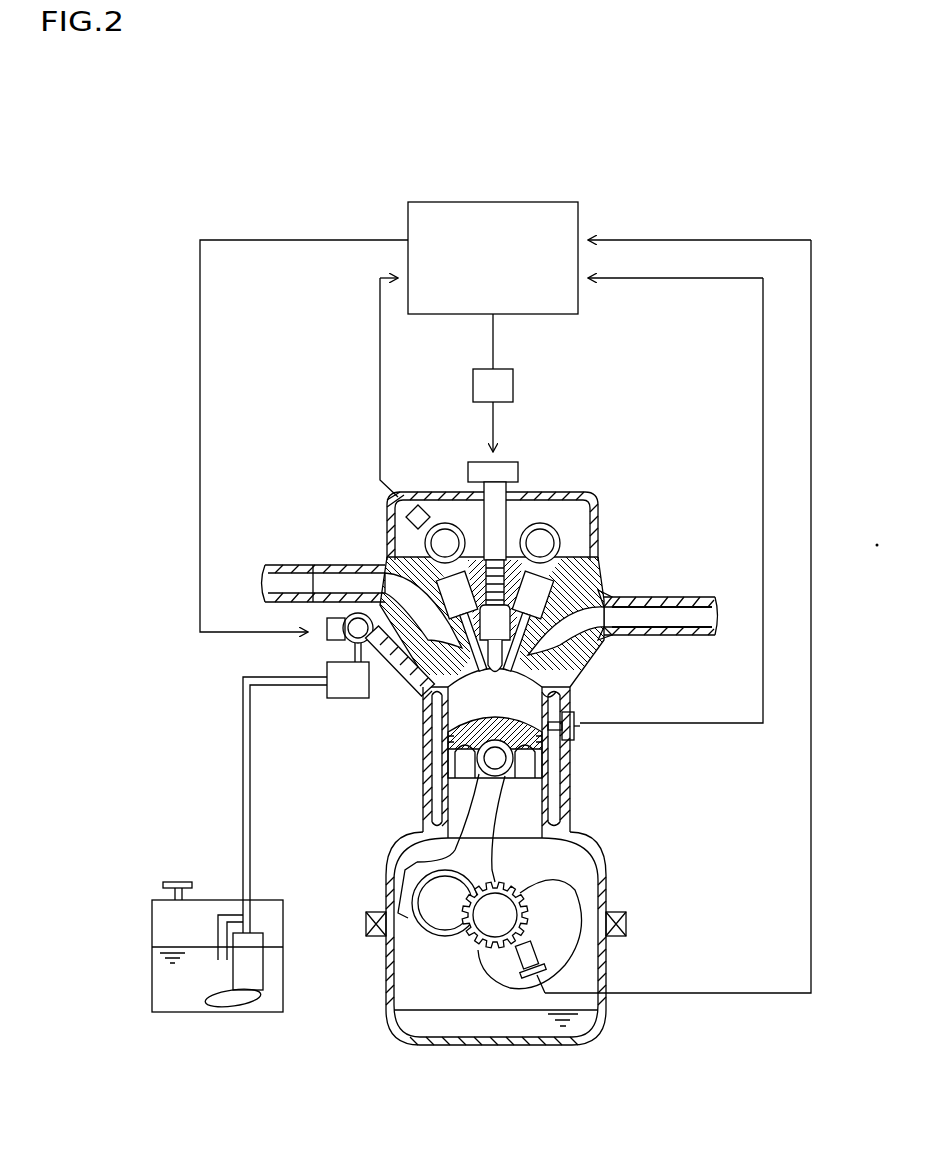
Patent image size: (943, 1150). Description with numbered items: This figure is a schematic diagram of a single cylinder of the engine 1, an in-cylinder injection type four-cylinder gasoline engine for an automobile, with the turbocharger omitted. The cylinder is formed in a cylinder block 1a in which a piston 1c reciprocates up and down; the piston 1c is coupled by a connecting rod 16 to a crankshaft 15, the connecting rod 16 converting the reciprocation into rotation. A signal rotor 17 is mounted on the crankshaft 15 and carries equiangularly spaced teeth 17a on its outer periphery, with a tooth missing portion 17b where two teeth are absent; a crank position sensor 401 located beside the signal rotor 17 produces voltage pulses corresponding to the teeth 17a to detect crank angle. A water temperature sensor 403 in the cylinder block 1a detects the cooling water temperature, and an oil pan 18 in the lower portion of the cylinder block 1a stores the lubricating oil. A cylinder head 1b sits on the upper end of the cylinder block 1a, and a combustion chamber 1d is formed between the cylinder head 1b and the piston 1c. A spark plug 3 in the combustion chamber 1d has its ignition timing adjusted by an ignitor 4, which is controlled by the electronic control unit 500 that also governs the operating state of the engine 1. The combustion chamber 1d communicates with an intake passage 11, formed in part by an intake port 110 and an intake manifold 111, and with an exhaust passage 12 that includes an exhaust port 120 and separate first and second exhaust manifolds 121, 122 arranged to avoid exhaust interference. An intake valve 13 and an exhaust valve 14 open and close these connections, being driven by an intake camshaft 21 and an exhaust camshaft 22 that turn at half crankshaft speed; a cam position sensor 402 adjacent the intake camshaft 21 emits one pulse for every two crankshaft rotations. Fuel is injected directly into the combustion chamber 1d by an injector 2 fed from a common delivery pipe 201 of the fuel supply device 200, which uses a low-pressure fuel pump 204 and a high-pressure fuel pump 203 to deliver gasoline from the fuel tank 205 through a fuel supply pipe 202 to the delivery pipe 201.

The electronic control unit (ECU) 500 is at (538, 202).
The ignitor 4 is at (513, 385).
The cam position sensor 402 is at (425, 500).
The intake camshaft 21 is at (443, 515).
The exhaust camshaft 22 is at (540, 515).
The intake passage 11 is at (312, 546).
The intake manifold 111 is at (333, 582).
The intake port 110 is at (385, 576).
The cylinder head 1b is at (607, 558).
The exhaust passage 12 is at (690, 588).
The exhaust port 120 is at (612, 606).
The first exhaust manifold 121 is at (672, 617).
The second exhaust manifold 122 is at (672, 617).
The delivery pipe 201 is at (353, 630).
The injector 2 is at (391, 650).
The high-pressure fuel pump 203 is at (328, 693).
The fuel supply pipe 202 is at (243, 729).
The fuel supply device 200 is at (213, 880).
The low-pressure fuel pump 204 is at (257, 977).
The fuel tank 205 is at (190, 1015).
The intake valve 13 is at (462, 706).
The combustion chamber 1d is at (450, 718).
The piston 1c is at (453, 738).
The exhaust valve 14 is at (533, 640).
The spark plug 3 is at (546, 698).
The water temperature sensor 403 is at (580, 738).
The cylinder block 1a is at (568, 778).
The engine 1 is at (672, 772).
The connecting rod 16 is at (470, 795).
The tooth missing portion 17b is at (524, 882).
The teeth 17a is at (527, 900).
The crankshaft 15 is at (487, 918).
The signal rotor 17 is at (478, 950).
The crank position sensor 401 is at (548, 962).
The oil pan 18 is at (604, 1045).